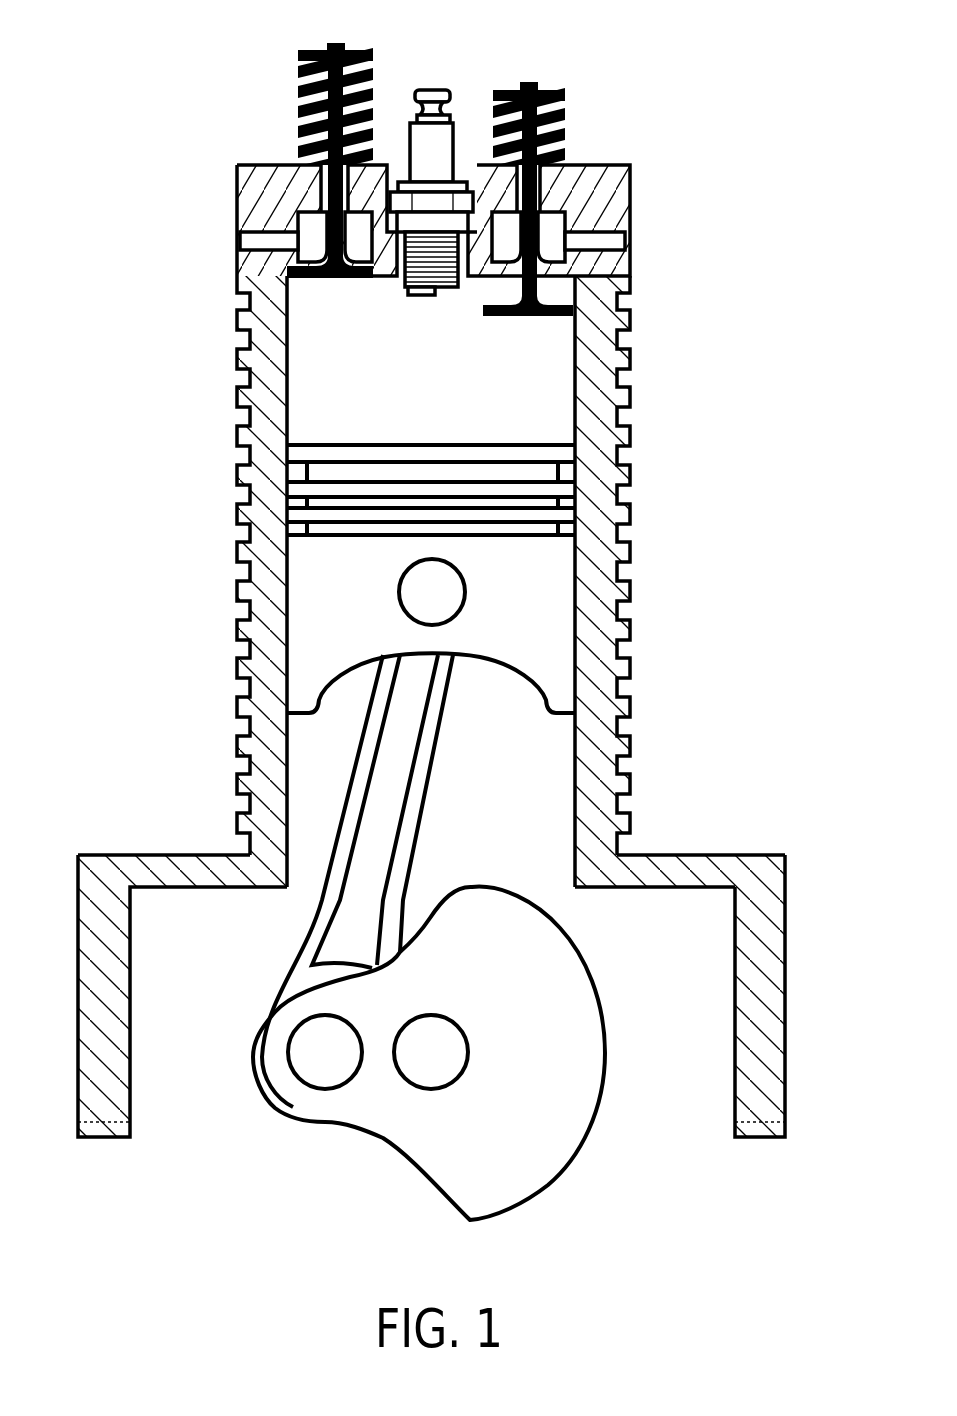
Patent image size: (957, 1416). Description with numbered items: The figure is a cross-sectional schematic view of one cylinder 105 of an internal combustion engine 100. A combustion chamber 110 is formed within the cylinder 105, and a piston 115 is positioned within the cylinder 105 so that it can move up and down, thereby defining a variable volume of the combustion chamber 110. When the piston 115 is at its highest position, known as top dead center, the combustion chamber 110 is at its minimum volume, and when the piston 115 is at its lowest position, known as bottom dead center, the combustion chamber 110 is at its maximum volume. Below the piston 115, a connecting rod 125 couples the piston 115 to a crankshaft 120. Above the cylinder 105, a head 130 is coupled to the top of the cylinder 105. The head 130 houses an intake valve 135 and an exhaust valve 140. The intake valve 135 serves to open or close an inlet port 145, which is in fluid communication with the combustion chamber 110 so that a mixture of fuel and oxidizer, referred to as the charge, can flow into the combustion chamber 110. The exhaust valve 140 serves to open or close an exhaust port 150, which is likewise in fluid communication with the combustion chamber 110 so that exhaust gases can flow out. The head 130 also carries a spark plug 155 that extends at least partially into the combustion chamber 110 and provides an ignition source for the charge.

The internal combustion engine 100 is at (715, 83).
The cylinder 105 is at (630, 355).
The combustion chamber 110 is at (548, 423).
The piston 115 is at (543, 602).
The crankshaft 120 is at (568, 1038).
The connecting rod 125 is at (418, 753).
The head 130 is at (233, 198).
The intake valve 135 is at (557, 85).
The exhaust valve 140 is at (312, 50).
The inlet port 145 is at (640, 240).
The exhaust port 150 is at (228, 244).
The spark plug 155 is at (433, 90).